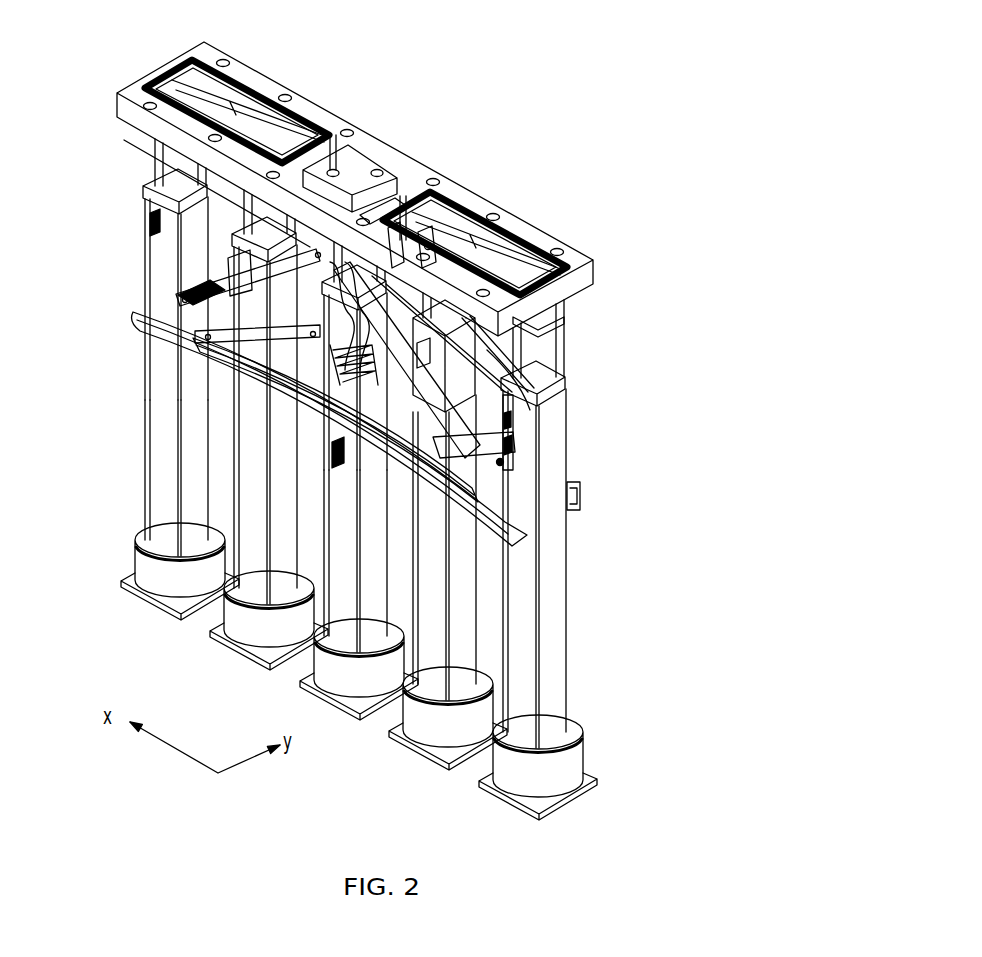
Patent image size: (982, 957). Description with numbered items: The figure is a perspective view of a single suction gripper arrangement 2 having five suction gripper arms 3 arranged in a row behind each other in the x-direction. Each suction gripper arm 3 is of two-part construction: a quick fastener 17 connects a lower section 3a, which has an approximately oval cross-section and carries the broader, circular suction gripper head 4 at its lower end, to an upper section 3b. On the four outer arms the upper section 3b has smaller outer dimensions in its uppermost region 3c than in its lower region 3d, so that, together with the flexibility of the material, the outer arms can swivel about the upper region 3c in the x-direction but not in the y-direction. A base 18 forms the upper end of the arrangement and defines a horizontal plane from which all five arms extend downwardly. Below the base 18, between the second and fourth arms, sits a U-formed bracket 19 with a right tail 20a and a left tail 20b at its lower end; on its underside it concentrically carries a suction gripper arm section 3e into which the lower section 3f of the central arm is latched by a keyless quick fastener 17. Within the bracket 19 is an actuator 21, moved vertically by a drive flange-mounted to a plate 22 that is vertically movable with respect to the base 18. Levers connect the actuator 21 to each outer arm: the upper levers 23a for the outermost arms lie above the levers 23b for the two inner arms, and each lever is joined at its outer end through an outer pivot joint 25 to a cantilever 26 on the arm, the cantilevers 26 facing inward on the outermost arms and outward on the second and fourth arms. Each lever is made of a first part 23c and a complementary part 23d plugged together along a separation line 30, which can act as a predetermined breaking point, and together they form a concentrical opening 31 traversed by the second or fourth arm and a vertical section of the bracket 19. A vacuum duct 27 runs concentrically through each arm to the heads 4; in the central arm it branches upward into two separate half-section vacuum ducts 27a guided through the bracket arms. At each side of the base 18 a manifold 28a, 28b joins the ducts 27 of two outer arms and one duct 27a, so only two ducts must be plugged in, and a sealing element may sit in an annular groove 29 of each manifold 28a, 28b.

The suction gripper arrangement 2 is at (78, 112).
The suction gripper arm 3 is at (158, 440).
The lower section 3a is at (157, 500).
The upper section 3b is at (146, 190).
The upper region 3c is at (545, 345).
The lower region 3d is at (553, 405).
The suction gripper arm section 3e is at (345, 650).
The lower section of the central suction gripper arm 3f is at (333, 640).
The suction gripper head 4 is at (148, 580).
The quick fastener 17 is at (150, 222).
The base 18 is at (508, 222).
The U-formed bracket 19 is at (333, 135).
The right tail 20a is at (527, 540).
The left tail 20b is at (136, 320).
The actuator 21 is at (378, 240).
The plate 22 is at (348, 165).
The upper lever 23a is at (232, 268).
The lever for the inner suction gripper arms 23b is at (200, 590).
The first lever part 23c is at (578, 500).
The complementary lever part 23d is at (560, 378).
The outer pivot joint 25 is at (180, 306).
The cantilever 26 is at (183, 283).
The vacuum duct 27 is at (430, 235).
The separate vacuum duct 27a is at (395, 230).
The manifold 28a is at (172, 72).
The manifold 28b is at (520, 266).
The annular groove 29 is at (148, 84).
The separation line 30 is at (500, 462).
The concentrical opening 31 is at (512, 425).